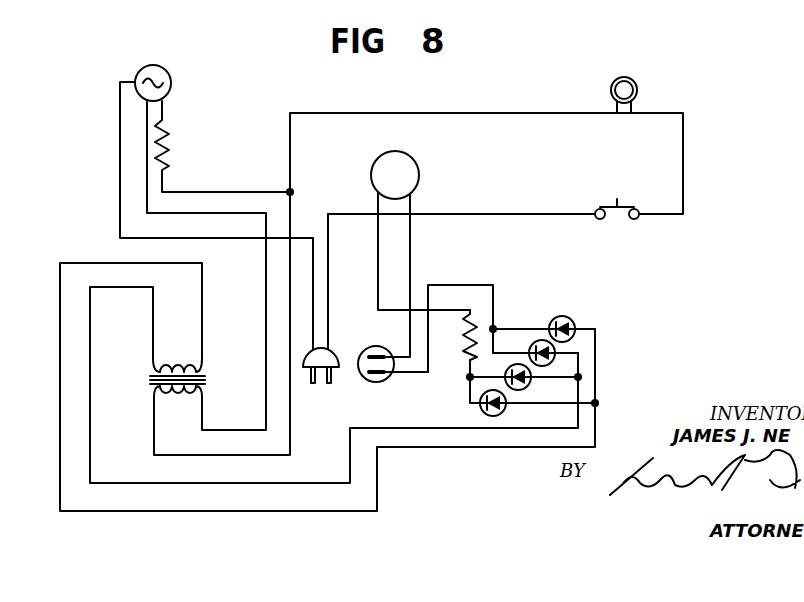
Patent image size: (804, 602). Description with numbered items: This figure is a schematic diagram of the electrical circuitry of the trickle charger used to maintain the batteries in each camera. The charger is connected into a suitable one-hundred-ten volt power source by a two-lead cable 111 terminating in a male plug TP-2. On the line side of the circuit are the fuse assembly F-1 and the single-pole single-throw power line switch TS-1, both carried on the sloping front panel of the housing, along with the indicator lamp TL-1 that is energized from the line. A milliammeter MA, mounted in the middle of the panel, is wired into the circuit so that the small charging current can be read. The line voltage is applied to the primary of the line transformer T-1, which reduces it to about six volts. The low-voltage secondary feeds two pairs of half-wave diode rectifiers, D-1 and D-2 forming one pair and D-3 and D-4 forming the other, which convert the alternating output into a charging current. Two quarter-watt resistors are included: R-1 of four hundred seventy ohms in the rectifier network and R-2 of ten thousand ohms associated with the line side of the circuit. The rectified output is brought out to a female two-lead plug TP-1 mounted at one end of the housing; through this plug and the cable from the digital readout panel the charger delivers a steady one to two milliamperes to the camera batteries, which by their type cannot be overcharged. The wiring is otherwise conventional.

The fuse assembly F-1 is at (153, 69).
The resistor R-2 is at (222, 146).
The milliammeter MA is at (395, 175).
The indicator lamp TL-1 is at (620, 81).
The power line switch TS-1 is at (618, 221).
The line transformer T-1 is at (194, 377).
The 2-lead cable 111 is at (313, 297).
The male plug TP-2 is at (322, 377).
The female 2-lead plug TP-1 is at (381, 376).
The resistor R-1 is at (454, 335).
The half-wave diode rectifier D-1 is at (579, 322).
The half-wave diode rectifier D-2 is at (525, 348).
The half-wave diode rectifier D-3 is at (537, 382).
The half-wave diode rectifier D-4 is at (511, 409).